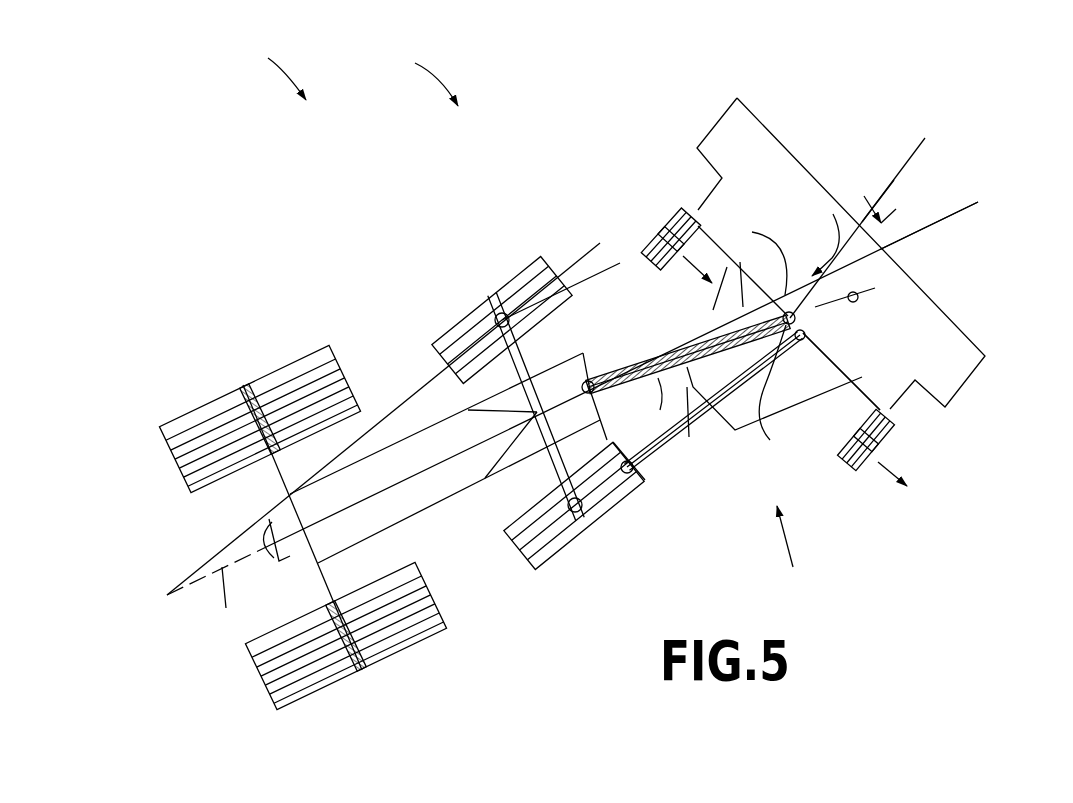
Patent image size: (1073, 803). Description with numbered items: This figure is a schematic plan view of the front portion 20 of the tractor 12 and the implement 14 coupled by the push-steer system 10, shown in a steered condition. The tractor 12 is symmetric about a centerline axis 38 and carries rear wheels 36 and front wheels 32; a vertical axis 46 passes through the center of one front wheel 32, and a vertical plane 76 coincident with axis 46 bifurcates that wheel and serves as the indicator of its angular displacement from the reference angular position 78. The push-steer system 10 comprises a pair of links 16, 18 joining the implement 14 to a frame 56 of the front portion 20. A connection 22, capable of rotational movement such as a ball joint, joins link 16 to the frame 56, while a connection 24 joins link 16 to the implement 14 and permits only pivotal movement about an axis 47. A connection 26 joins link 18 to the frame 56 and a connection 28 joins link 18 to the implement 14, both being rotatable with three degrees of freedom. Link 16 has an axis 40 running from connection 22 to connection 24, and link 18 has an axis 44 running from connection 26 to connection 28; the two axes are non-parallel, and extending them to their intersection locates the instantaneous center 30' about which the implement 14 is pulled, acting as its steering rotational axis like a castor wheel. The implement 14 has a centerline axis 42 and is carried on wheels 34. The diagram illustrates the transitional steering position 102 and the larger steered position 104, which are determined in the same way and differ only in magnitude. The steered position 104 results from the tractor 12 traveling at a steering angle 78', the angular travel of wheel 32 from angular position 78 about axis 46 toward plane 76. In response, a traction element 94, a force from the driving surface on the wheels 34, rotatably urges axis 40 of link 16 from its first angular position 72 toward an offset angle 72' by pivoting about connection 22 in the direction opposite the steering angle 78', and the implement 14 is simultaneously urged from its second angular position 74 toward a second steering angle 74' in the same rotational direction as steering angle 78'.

The push-steer system 10 is at (795, 554).
The tractor 12 is at (424, 510).
The implement 14 is at (728, 133).
The link 16 is at (714, 338).
The link 18 is at (672, 434).
The front portion 20 is at (587, 378).
The connection 22 is at (597, 382).
The connection 24 is at (757, 271).
The connection 26 is at (640, 484).
The connection 28 is at (795, 322).
The instantaneous center 30' is at (899, 281).
The front wheel 32 is at (440, 345).
The wheels 34 is at (678, 210).
The rear wheels 36 is at (290, 360).
The centerline axis 38 is at (976, 204).
The axis 40 is at (761, 298).
The axis 42 is at (895, 180).
The axis 44 is at (827, 323).
The axis 46 is at (497, 300).
The axis 47 is at (779, 390).
The frame 56 is at (632, 492).
The first angular position 72 is at (743, 271).
The offset angle 72' is at (819, 236).
The second angular position 74 is at (929, 206).
The second steering angle 74' is at (860, 201).
The vertical plane 76 is at (600, 243).
The angular position 78 is at (561, 300).
The steering angle 78' is at (345, 406).
The traction element 94 is at (683, 256).
The transitional steering position 102 is at (263, 70).
The steered position 104 is at (413, 76).